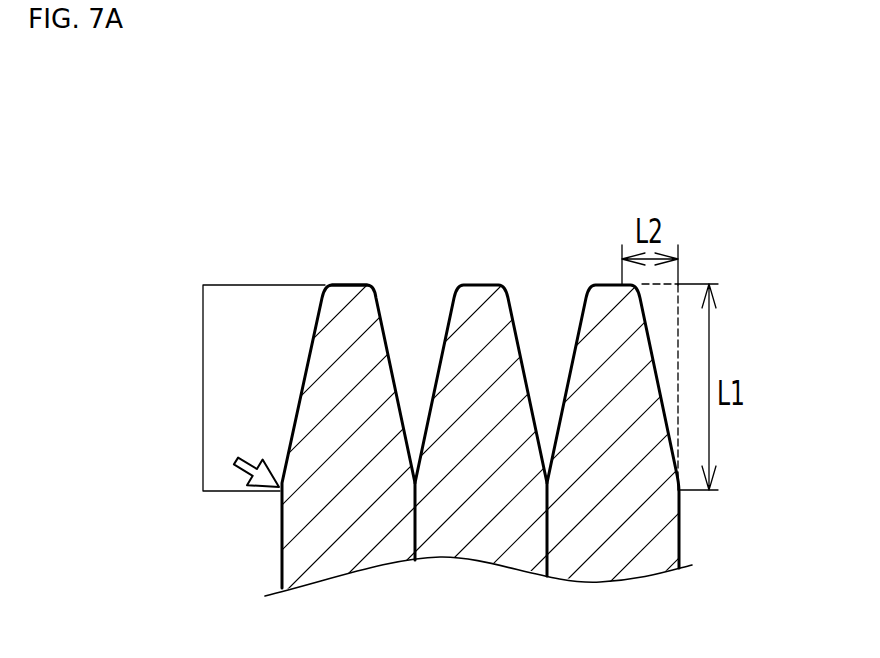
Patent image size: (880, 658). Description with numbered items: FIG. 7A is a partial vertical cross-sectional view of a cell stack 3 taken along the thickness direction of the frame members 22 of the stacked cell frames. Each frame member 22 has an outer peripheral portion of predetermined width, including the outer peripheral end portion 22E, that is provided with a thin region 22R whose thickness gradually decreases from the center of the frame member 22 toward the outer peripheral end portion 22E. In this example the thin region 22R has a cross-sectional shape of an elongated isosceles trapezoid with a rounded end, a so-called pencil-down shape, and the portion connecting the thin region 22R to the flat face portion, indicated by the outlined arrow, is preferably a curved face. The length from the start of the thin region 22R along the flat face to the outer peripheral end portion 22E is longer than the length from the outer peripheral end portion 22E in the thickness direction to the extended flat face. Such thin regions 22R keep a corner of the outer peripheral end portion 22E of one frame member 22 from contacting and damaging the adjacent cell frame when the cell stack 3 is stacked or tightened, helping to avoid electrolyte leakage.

The cell stack 3 is at (443, 335).
The frame member 22 is at (352, 293).
The outer peripheral end portion 22E is at (345, 287).
The thin region 22R is at (203, 392).